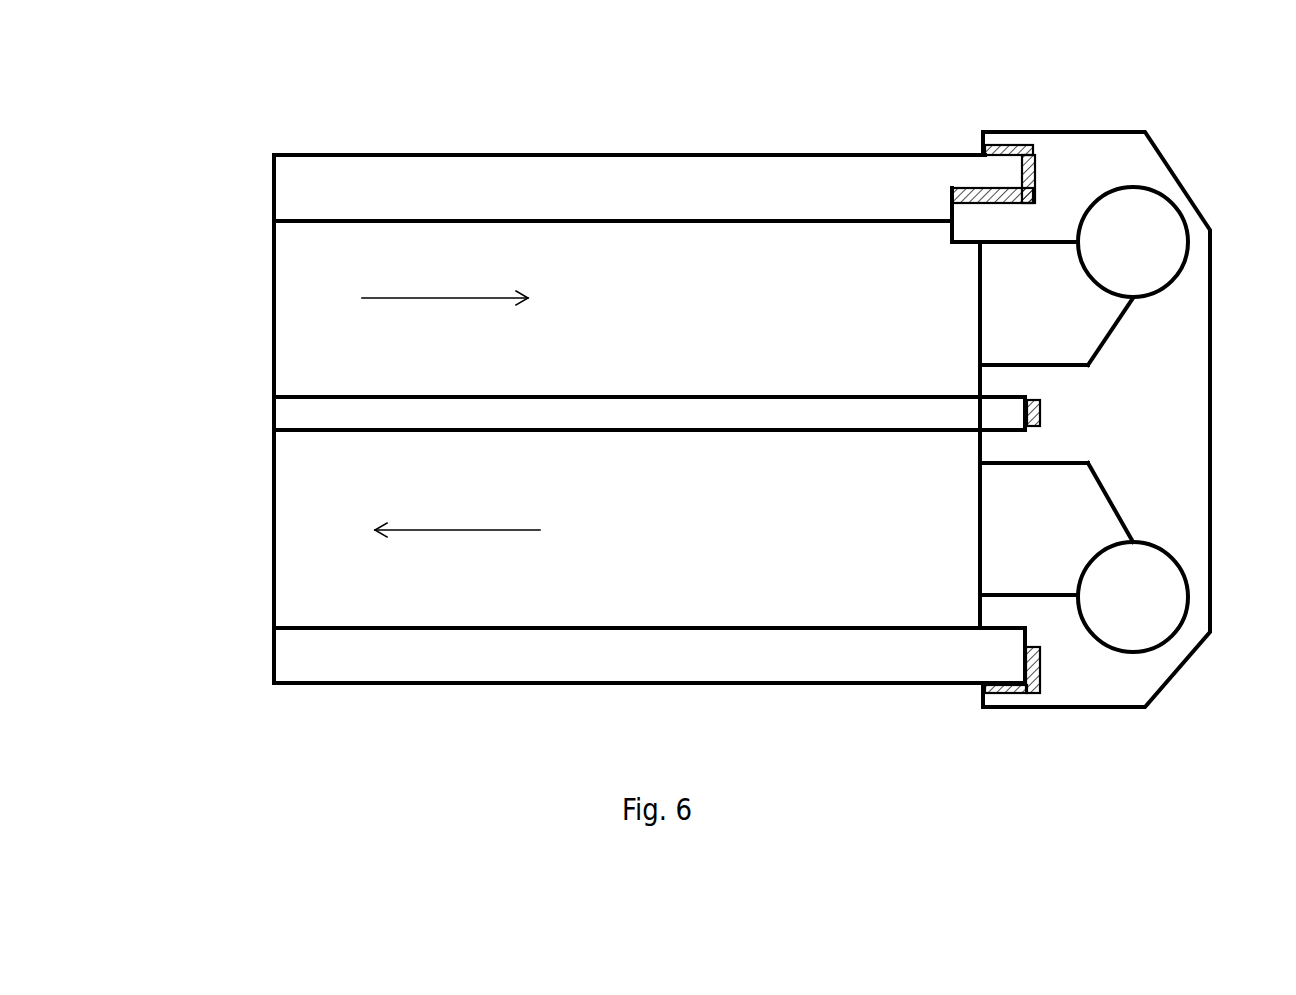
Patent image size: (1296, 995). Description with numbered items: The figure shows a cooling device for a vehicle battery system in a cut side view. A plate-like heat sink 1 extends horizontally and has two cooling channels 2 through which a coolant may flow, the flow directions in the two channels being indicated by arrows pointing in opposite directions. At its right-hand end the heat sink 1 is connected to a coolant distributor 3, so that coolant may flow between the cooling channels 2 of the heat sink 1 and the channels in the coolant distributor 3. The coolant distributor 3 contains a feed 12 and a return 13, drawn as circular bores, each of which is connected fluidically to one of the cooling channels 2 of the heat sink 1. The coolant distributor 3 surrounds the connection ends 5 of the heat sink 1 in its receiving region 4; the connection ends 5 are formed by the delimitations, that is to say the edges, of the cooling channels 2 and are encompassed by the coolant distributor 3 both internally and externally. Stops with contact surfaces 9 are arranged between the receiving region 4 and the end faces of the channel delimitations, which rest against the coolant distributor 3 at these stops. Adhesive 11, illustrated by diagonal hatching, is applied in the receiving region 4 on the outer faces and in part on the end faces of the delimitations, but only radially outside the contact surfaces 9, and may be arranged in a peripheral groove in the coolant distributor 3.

The heat sink 1 is at (432, 650).
The cooling channels 2 is at (334, 345).
The coolant distributor 3 is at (1090, 670).
The receiving region 4 is at (968, 137).
The connection ends 5 is at (962, 170).
The contact surfaces 9 is at (948, 213).
The adhesive 11 is at (1035, 160).
The feed 12 is at (1143, 598).
The return 13 is at (1153, 217).